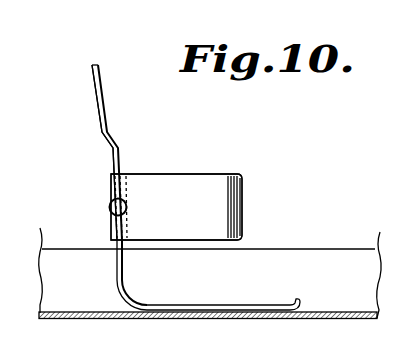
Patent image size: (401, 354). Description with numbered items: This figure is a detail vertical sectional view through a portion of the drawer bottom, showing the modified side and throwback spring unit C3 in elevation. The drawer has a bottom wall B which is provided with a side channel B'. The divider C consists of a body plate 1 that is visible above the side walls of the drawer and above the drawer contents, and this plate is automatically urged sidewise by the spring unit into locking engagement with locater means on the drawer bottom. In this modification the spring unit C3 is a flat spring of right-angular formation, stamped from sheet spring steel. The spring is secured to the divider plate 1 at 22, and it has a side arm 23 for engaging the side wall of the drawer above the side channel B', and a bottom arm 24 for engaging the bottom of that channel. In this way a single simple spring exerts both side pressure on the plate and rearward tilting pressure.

The body plate 1 is at (105, 114).
The divider C is at (93, 90).
The side and throwback spring unit C3 is at (148, 174).
The securing point of spring to divider plate 22 is at (109, 210).
The side arm 23 is at (212, 184).
The bottom arm 24 is at (221, 309).
The bottom wall B is at (210, 258).
The side channel B' is at (208, 292).